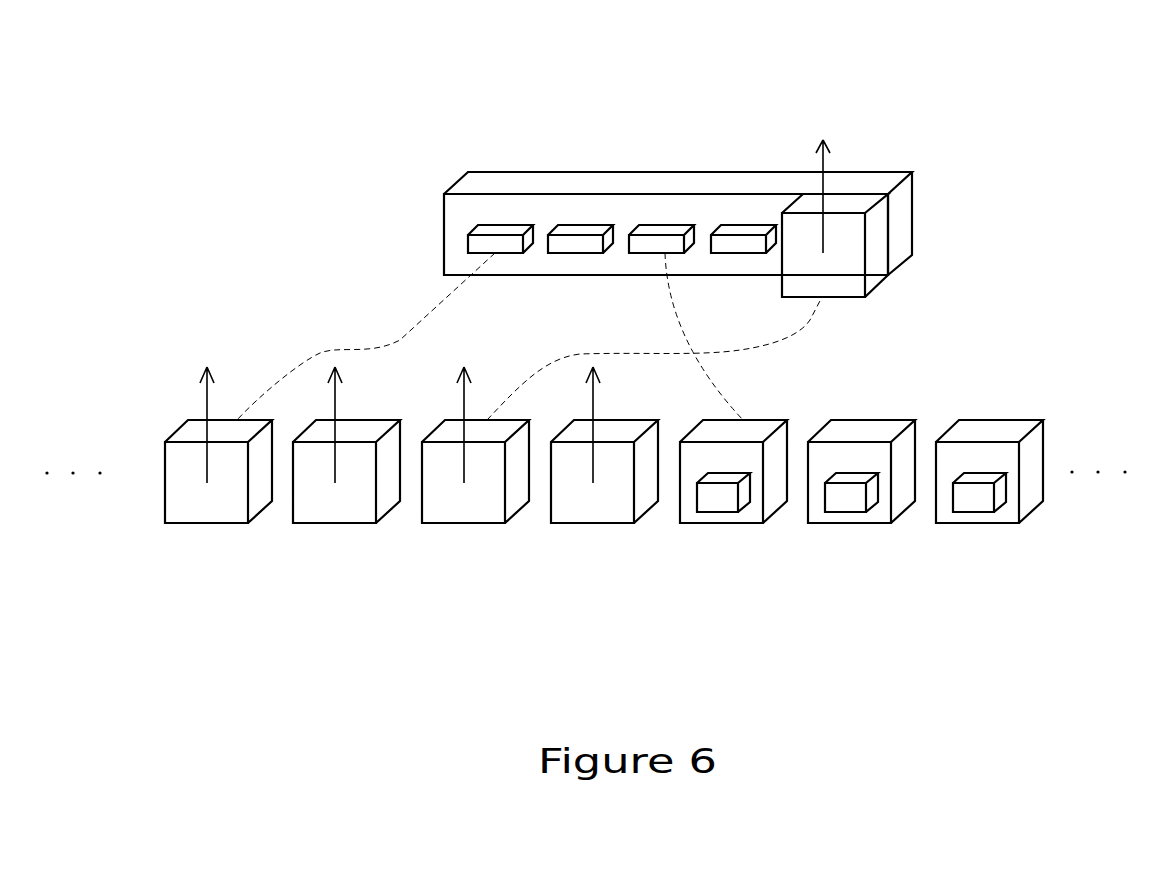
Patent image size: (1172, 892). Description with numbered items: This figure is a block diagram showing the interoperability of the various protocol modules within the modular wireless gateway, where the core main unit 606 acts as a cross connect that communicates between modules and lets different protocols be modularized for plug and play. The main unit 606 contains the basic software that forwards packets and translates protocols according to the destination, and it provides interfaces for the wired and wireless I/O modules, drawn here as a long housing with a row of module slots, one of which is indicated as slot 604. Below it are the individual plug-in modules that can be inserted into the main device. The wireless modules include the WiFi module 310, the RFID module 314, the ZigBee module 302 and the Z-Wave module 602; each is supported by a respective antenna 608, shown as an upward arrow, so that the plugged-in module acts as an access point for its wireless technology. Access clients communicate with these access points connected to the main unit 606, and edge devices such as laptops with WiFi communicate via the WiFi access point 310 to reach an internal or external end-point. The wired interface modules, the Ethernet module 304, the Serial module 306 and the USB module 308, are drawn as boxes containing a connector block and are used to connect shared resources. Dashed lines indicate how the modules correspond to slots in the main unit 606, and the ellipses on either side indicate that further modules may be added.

The core main unit 606 is at (605, 170).
The module port 604 is at (667, 222).
The antennas 608 is at (205, 400).
The WiFi module 310 is at (165, 457).
The RFID module 314 is at (367, 420).
The ZigBee module 302 is at (423, 519).
The Z-Wave module 602 is at (551, 516).
The Ethernet communication module 304 is at (765, 420).
The Serial communication module 306 is at (860, 420).
The USB communication module 308 is at (990, 420).